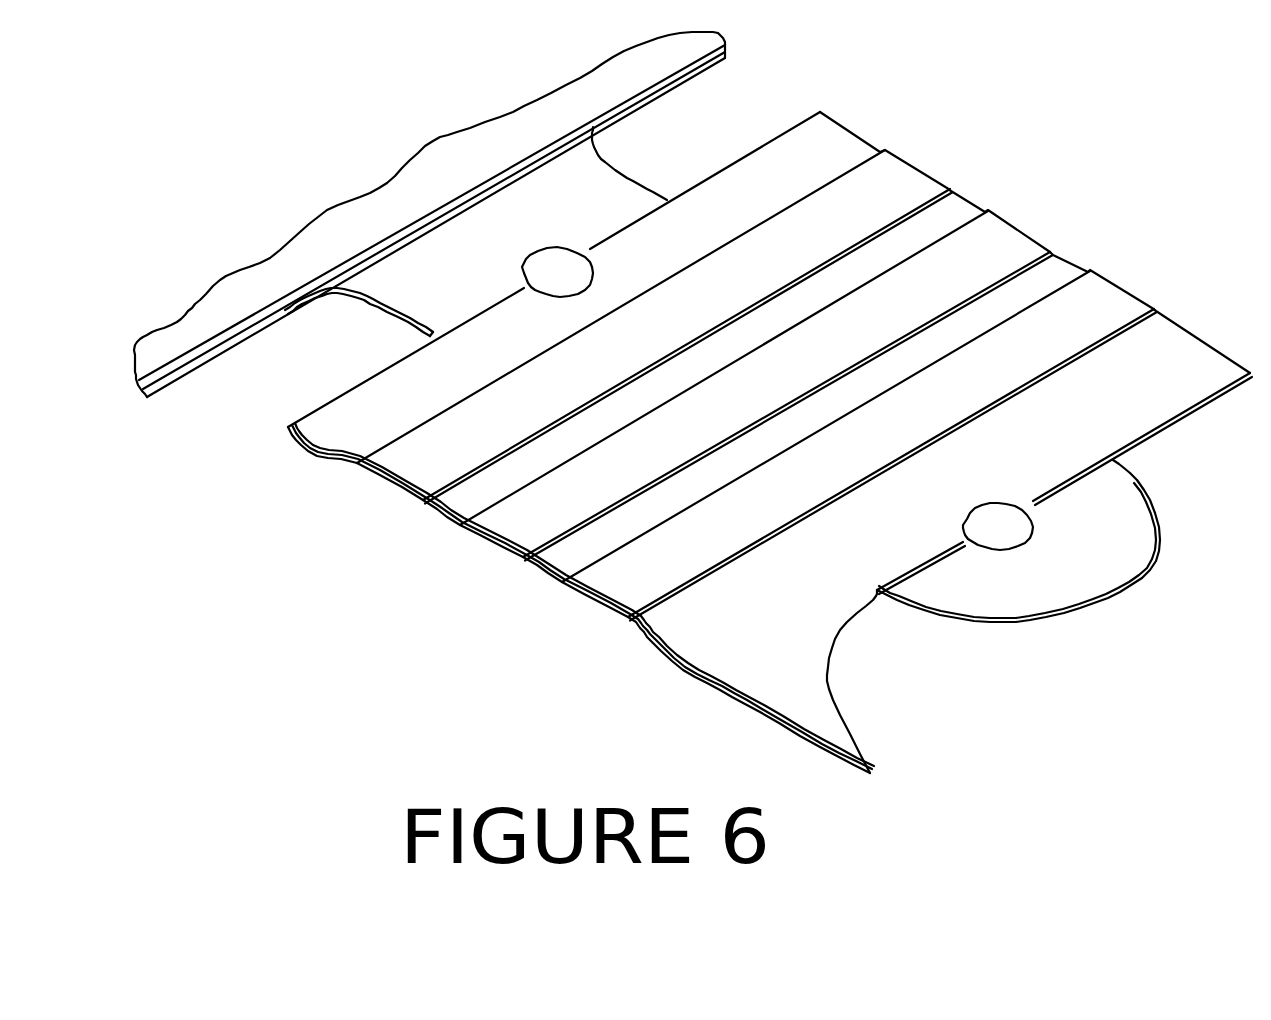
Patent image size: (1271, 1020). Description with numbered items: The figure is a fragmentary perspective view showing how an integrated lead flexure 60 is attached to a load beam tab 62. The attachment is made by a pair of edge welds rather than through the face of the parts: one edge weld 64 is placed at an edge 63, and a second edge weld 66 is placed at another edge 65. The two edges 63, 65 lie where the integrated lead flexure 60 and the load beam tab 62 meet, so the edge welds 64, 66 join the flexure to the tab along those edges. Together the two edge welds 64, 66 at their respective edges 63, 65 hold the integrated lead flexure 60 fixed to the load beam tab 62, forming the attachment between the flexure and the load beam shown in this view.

The integrated lead flexure 60 is at (727, 640).
The load beam tab 62 is at (1117, 503).
The edge 63 is at (920, 563).
The edge weld 64 is at (1023, 535).
The edge 65 is at (717, 175).
The edge weld 66 is at (522, 273).